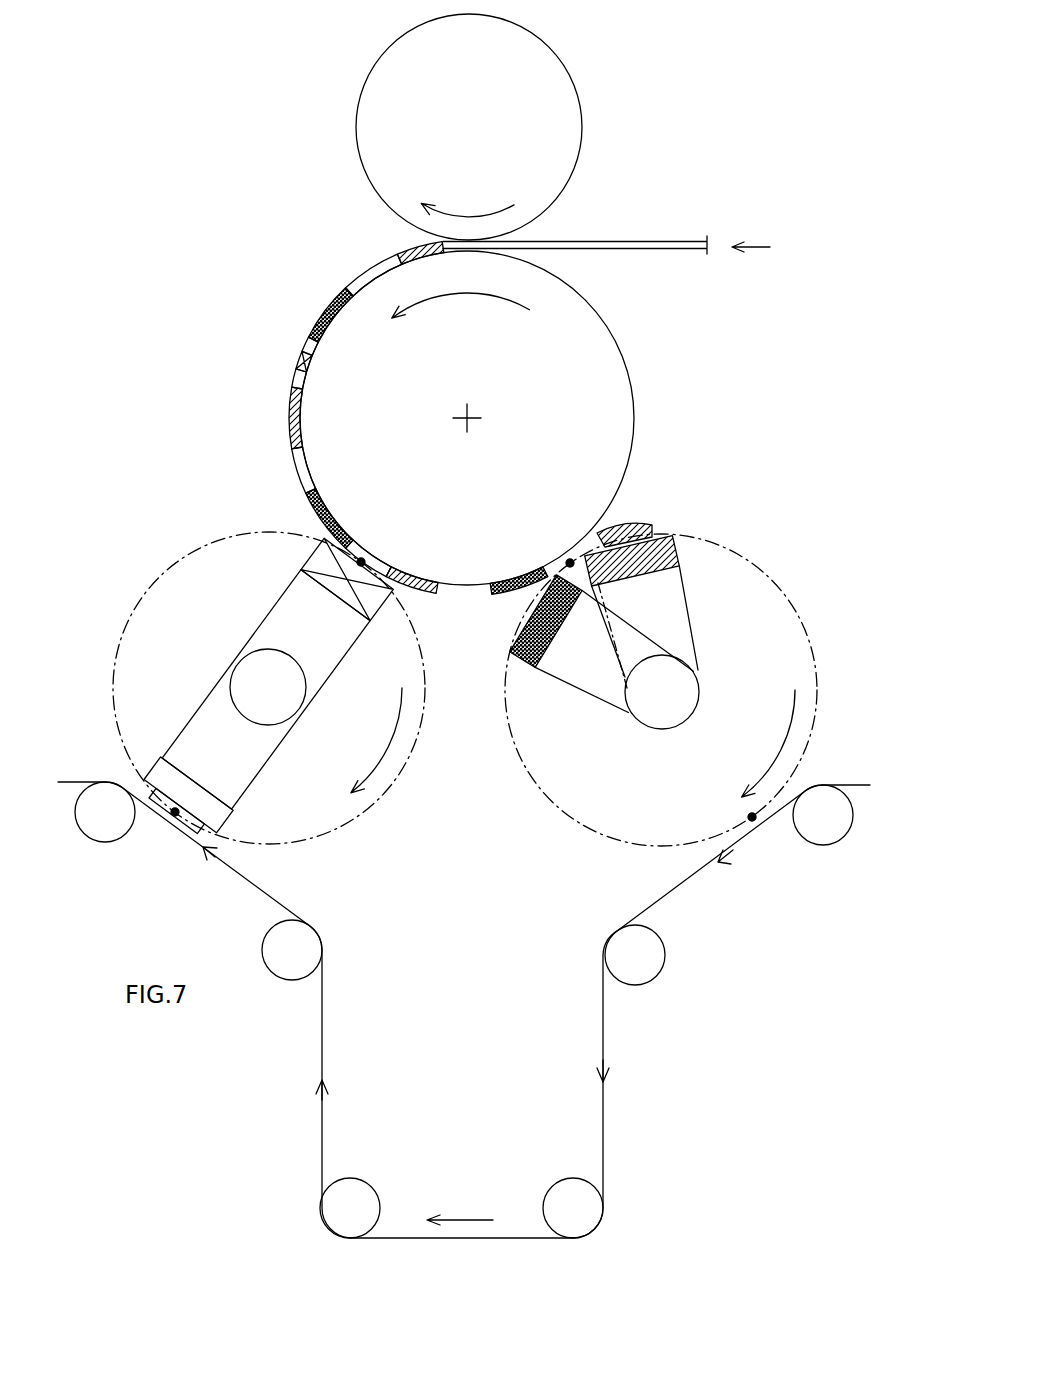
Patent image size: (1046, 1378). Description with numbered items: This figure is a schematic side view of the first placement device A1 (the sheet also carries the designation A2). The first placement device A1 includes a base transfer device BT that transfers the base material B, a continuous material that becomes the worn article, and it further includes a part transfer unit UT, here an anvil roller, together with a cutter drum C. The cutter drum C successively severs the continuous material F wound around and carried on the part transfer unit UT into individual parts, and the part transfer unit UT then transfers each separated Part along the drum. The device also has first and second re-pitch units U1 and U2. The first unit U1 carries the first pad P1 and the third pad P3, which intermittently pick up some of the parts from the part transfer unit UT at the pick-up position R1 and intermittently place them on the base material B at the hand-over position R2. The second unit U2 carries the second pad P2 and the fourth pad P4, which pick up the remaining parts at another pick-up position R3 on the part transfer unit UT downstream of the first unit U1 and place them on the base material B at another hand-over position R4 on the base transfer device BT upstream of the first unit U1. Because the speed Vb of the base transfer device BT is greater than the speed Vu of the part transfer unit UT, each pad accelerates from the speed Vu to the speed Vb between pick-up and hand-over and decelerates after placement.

The cutter drum C is at (556, 63).
The continuous material F is at (607, 241).
The part transfer unit UT is at (618, 337).
The speed of the part transfer unit Vu is at (461, 293).
The first placement device A1 is at (175, 276).
The part transfer apparatus (second embodiment) A2 is at (137, 204).
The part Part is at (398, 251).
The pick-up position R3 is at (567, 556).
The first unit U1 is at (140, 597).
The second unit U2 is at (740, 553).
The pick-up position R1 is at (355, 561).
The first pad P1 is at (374, 606).
The second pad P2 is at (536, 667).
The third pad P3 is at (160, 768).
The fourth pad P4 is at (678, 556).
The hand-over position R2 is at (172, 817).
The hand-over position R4 is at (753, 819).
The base material B is at (273, 900).
The base transfer device BT is at (635, 972).
The speed of the base transfer device Vb is at (460, 1208).